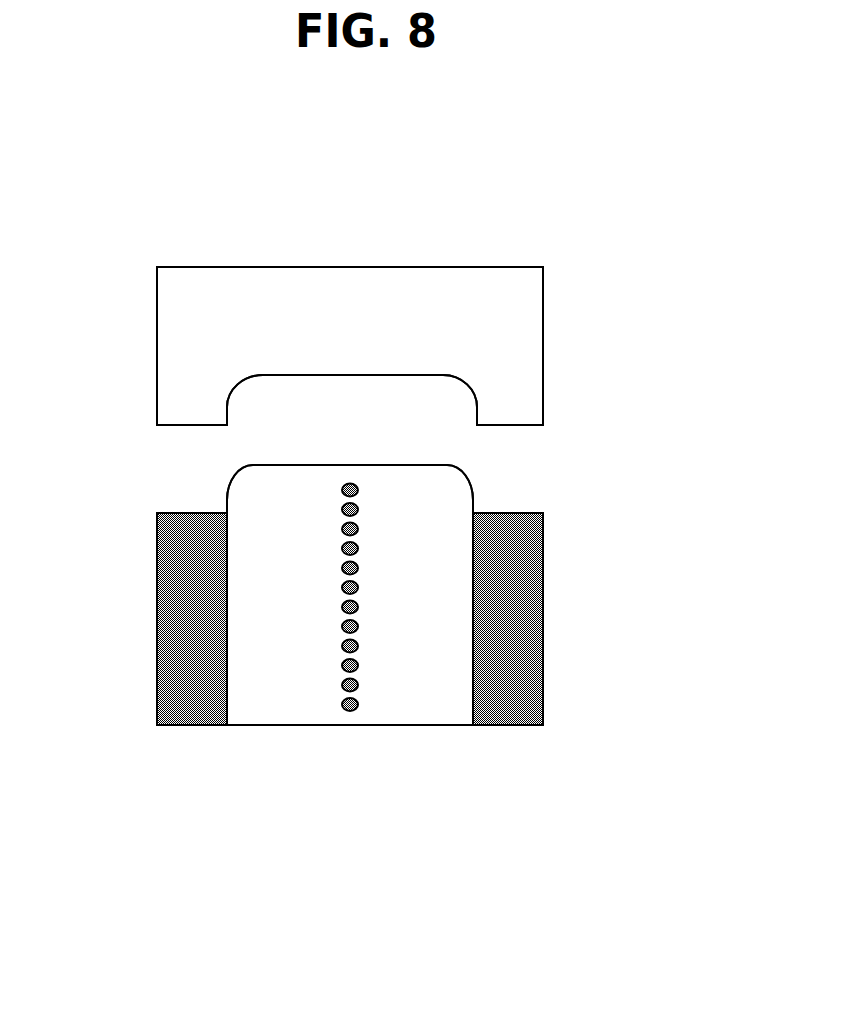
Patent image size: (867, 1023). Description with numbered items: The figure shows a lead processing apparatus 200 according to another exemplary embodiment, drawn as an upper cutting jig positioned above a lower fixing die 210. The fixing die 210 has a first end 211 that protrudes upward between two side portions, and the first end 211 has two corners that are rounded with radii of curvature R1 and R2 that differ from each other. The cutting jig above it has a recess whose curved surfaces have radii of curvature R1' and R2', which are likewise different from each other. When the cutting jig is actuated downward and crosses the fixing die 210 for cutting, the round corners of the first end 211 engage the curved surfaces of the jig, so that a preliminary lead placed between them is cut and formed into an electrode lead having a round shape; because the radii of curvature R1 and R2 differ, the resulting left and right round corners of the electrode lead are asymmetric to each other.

The lead processing apparatus 200 is at (93, 186).
The fixing die 210 is at (530, 326).
The first end 211 is at (459, 492).
The radius of curvature R1 is at (266, 498).
The radius of curvature R2 is at (445, 485).
The radius of curvature R1' is at (272, 405).
The radius of curvature R2' is at (445, 395).